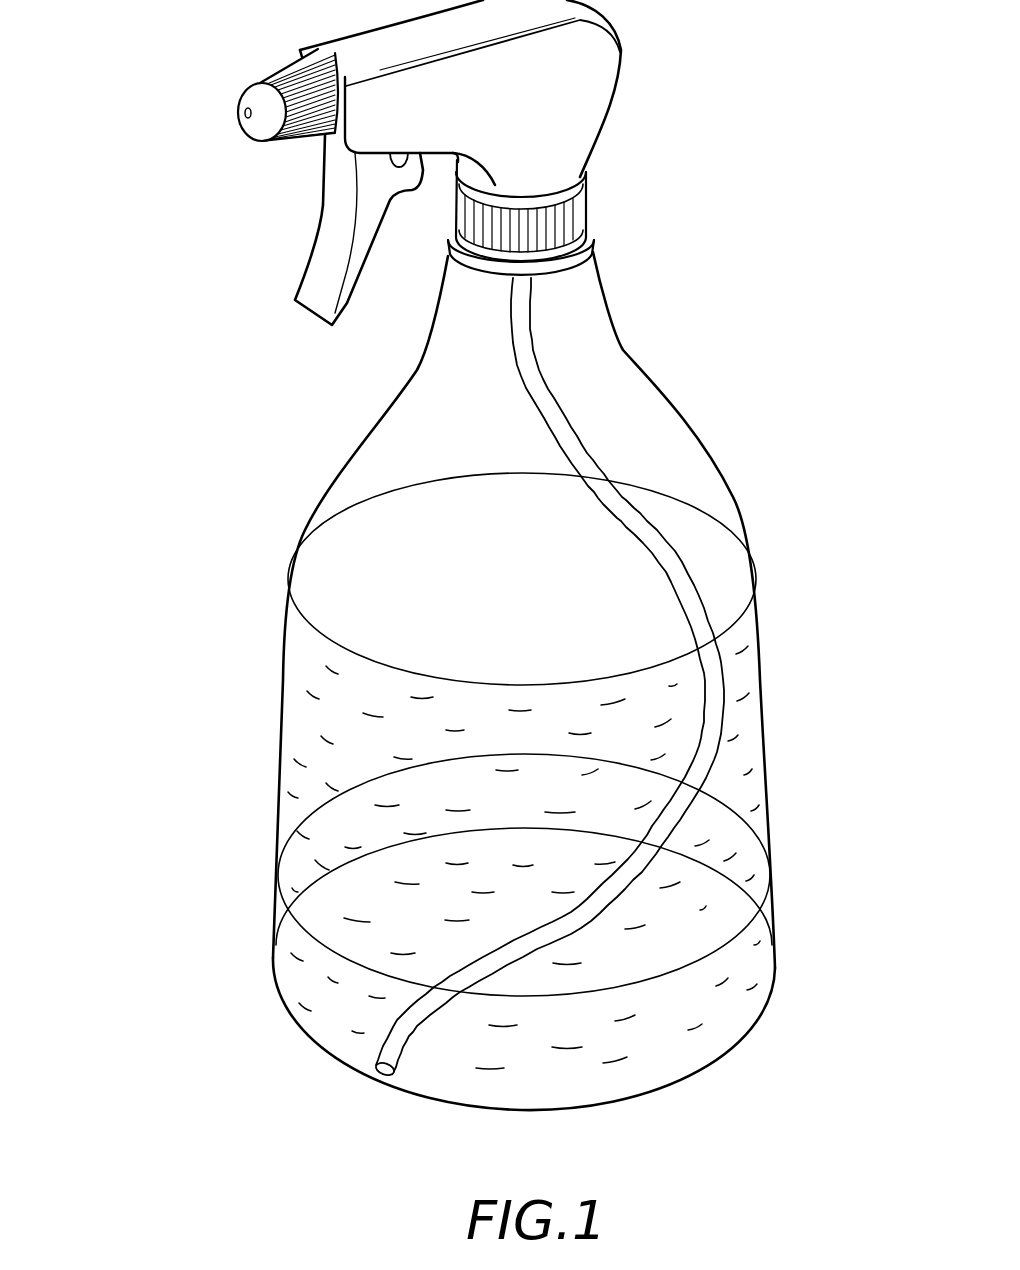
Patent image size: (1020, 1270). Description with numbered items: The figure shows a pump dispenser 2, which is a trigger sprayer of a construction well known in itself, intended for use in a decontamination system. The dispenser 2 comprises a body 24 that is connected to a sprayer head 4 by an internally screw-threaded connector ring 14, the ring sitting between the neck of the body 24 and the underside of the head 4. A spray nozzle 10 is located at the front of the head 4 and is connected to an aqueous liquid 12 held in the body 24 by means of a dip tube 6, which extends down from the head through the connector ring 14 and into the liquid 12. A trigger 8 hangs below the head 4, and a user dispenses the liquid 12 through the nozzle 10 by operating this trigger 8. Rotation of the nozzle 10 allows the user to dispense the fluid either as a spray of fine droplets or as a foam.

The pump dispenser 2 is at (207, 621).
The sprayer head 4 is at (593, 64).
The dip tube 6 is at (652, 540).
The trigger 8 is at (327, 272).
The spray nozzle 10 is at (268, 134).
The aqueous liquid 12 is at (737, 793).
The connector ring 14 is at (570, 215).
The body 24 is at (655, 384).